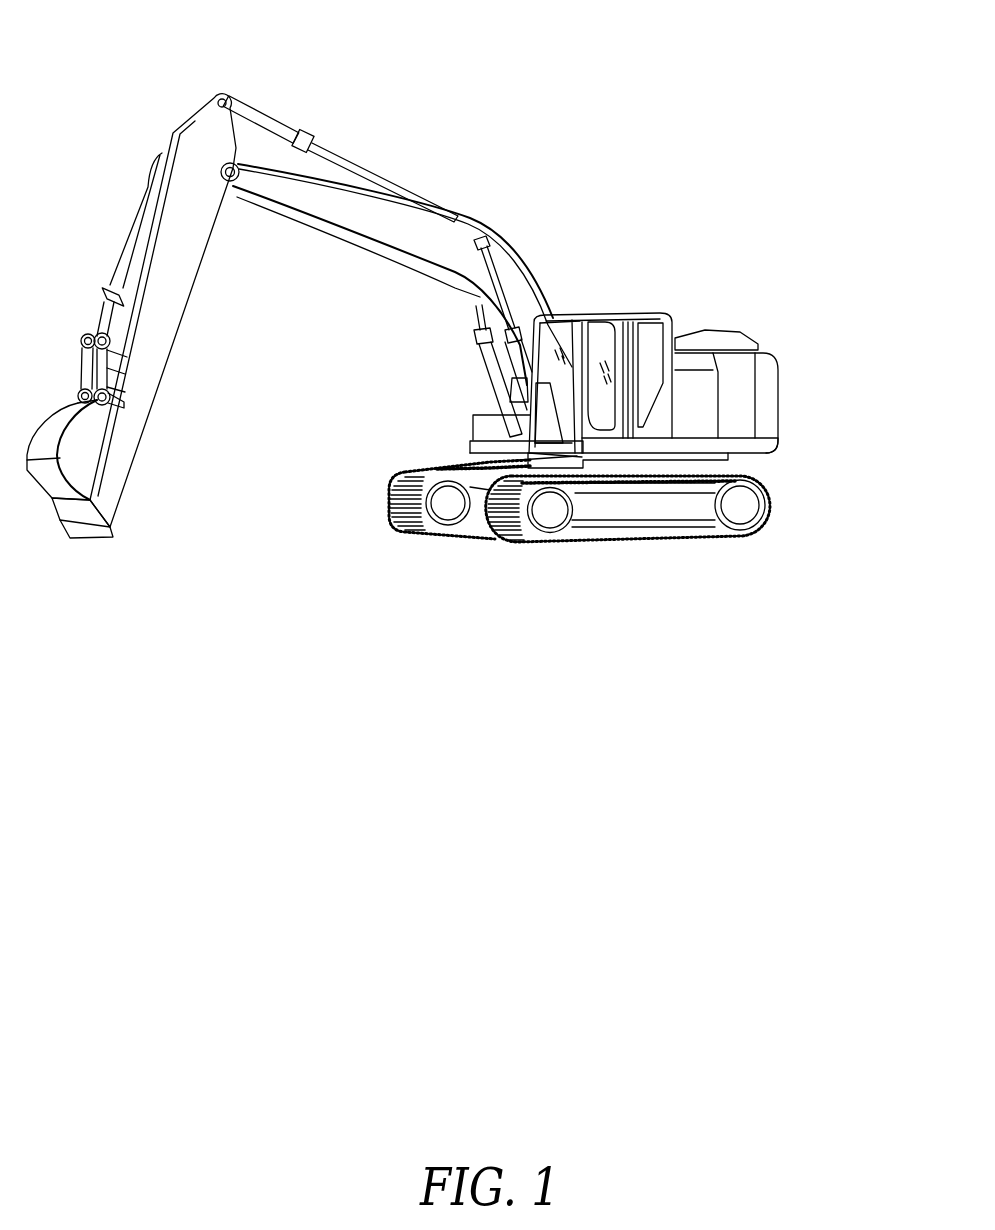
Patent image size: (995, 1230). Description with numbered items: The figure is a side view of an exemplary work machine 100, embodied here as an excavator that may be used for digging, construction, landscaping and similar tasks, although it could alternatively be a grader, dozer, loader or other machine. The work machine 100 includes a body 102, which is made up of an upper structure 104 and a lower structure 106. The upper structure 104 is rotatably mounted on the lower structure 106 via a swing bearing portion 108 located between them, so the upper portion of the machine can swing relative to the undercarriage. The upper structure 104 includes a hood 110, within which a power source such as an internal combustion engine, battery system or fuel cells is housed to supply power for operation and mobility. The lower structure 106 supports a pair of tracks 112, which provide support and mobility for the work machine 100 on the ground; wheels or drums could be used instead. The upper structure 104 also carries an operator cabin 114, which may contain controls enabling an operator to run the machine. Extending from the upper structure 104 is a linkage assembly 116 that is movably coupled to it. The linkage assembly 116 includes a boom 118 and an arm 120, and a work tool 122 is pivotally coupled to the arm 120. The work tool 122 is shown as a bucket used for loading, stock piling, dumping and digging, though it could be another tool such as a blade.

The work machine 100 is at (740, 103).
The body 102 is at (888, 400).
The upper structure 104 is at (805, 403).
The lower structure 106 is at (805, 499).
The swing bearing portion 108 is at (627, 470).
The hood 110 is at (734, 337).
The pair of tracks 112 is at (772, 513).
The operator cabin 114 is at (604, 340).
The linkage assembly 116 is at (188, 72).
The boom 118 is at (378, 214).
The arm 120 is at (170, 301).
The work tool 122 is at (113, 467).